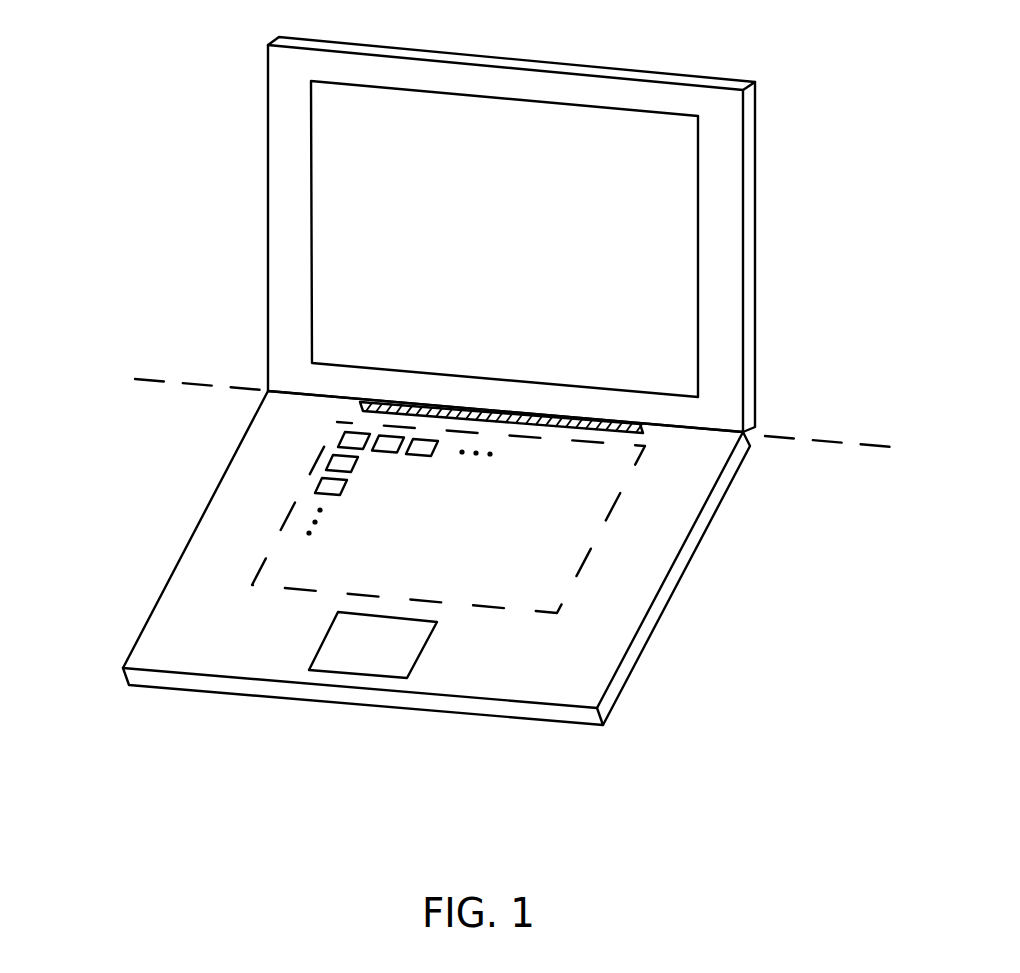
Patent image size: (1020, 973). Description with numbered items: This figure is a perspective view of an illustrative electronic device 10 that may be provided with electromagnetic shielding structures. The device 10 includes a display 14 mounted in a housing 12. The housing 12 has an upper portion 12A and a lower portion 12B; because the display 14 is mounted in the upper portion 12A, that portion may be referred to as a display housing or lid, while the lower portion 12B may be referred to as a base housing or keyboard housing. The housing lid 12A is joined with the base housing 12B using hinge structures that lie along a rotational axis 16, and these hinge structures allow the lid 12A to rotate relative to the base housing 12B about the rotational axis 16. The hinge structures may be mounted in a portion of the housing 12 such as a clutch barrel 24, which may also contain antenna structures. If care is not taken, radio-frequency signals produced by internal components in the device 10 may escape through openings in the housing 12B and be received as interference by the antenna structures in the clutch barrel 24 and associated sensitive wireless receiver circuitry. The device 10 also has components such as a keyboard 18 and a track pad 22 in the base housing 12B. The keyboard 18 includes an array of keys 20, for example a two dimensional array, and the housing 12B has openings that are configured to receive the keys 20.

The electronic device 10 is at (838, 78).
The housing 12 is at (253, 31).
The upper portion 12A is at (755, 363).
The lower portion 12B is at (663, 622).
The display 14 is at (702, 253).
The rotational axis 16 is at (197, 383).
The keyboard 18 is at (280, 533).
The keys 20 is at (340, 440).
The track pad 22 is at (365, 662).
The clutch barrel 24 is at (360, 405).